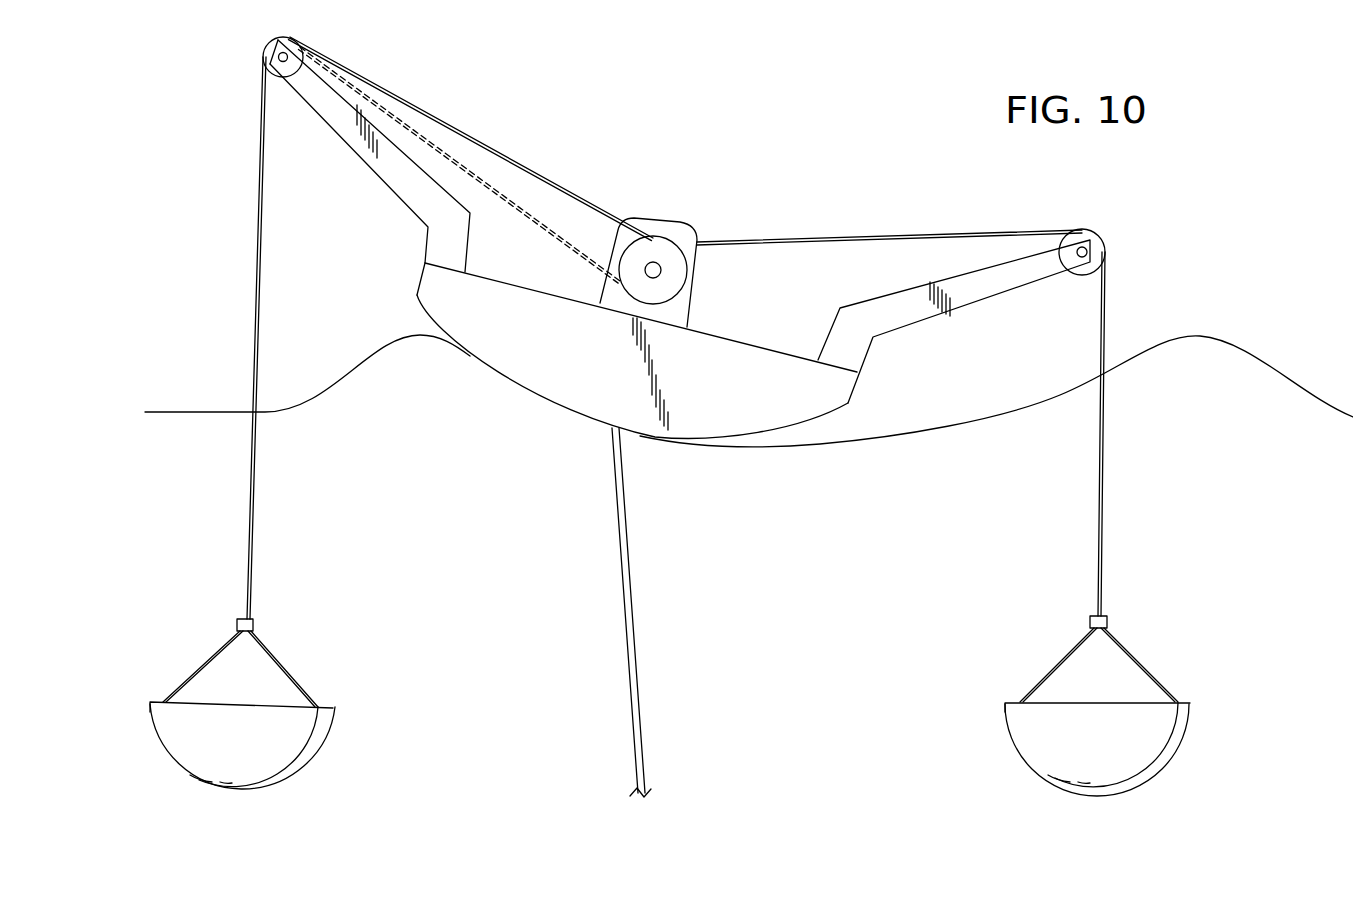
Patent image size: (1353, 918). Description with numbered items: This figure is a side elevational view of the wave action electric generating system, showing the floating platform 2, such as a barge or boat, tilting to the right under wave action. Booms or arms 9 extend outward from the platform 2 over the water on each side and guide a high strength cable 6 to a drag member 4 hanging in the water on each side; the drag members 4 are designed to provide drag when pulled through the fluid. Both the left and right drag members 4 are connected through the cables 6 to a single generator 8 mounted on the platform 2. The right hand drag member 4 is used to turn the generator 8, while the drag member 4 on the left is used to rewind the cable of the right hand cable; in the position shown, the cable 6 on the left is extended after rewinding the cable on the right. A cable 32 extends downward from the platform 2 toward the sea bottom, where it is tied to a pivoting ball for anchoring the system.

The floating platform 2 is at (742, 422).
The drag member 4 is at (330, 743).
The cable 6 is at (400, 97).
The generator 8 is at (667, 214).
The boom 9 is at (395, 185).
The cable 32 is at (635, 663).